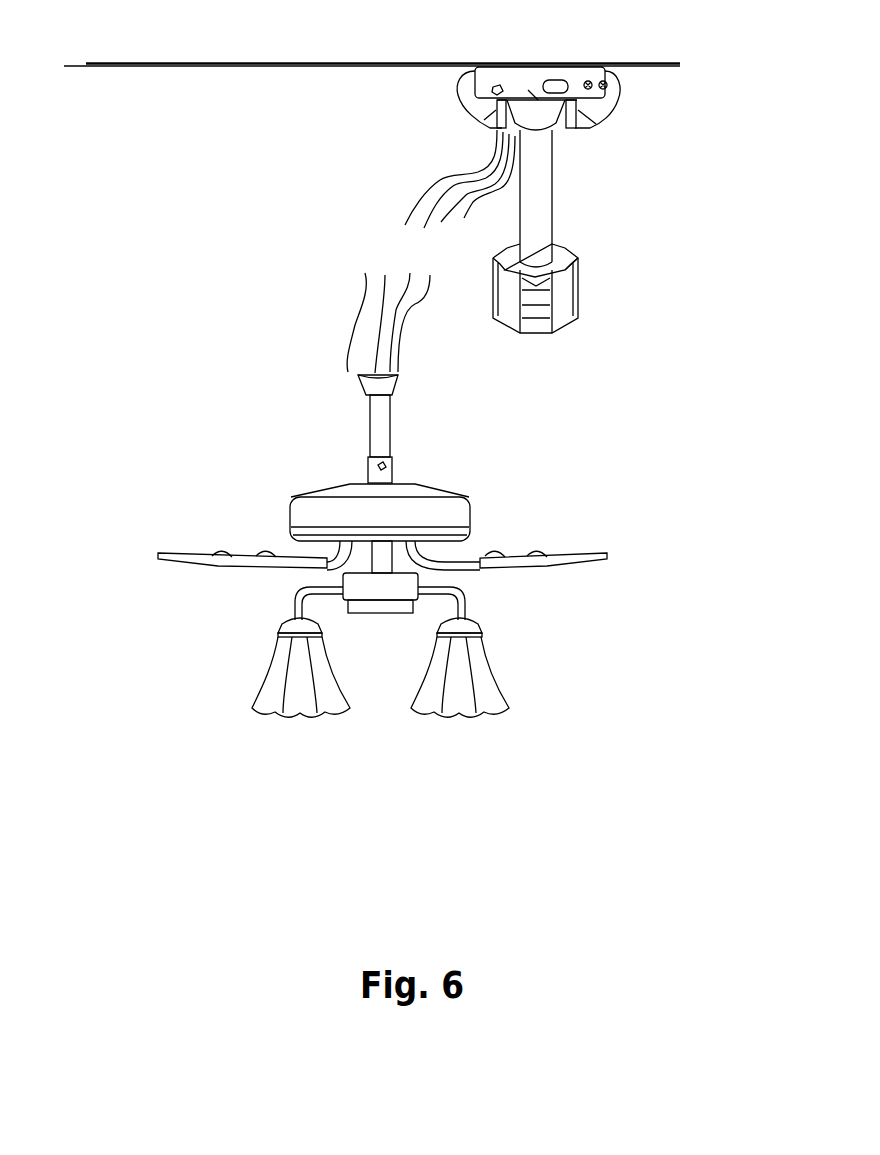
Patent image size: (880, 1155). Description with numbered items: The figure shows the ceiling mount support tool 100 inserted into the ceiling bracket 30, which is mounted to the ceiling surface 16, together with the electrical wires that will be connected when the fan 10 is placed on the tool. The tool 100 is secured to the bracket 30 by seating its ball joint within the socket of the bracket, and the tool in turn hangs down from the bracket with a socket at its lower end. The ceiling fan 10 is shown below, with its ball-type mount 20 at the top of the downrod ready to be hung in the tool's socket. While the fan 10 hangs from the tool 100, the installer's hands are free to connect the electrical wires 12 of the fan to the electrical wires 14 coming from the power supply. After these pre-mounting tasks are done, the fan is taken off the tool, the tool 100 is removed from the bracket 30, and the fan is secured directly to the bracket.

The fan 10 is at (558, 470).
The electrical wires of the fan 12 is at (357, 298).
The electrical wires from the power supply 14 is at (405, 199).
The ceiling surface 16 is at (188, 68).
The canopy / wire cup 20 is at (360, 395).
The ceiling bracket 30 is at (630, 110).
The tool 100 is at (608, 240).